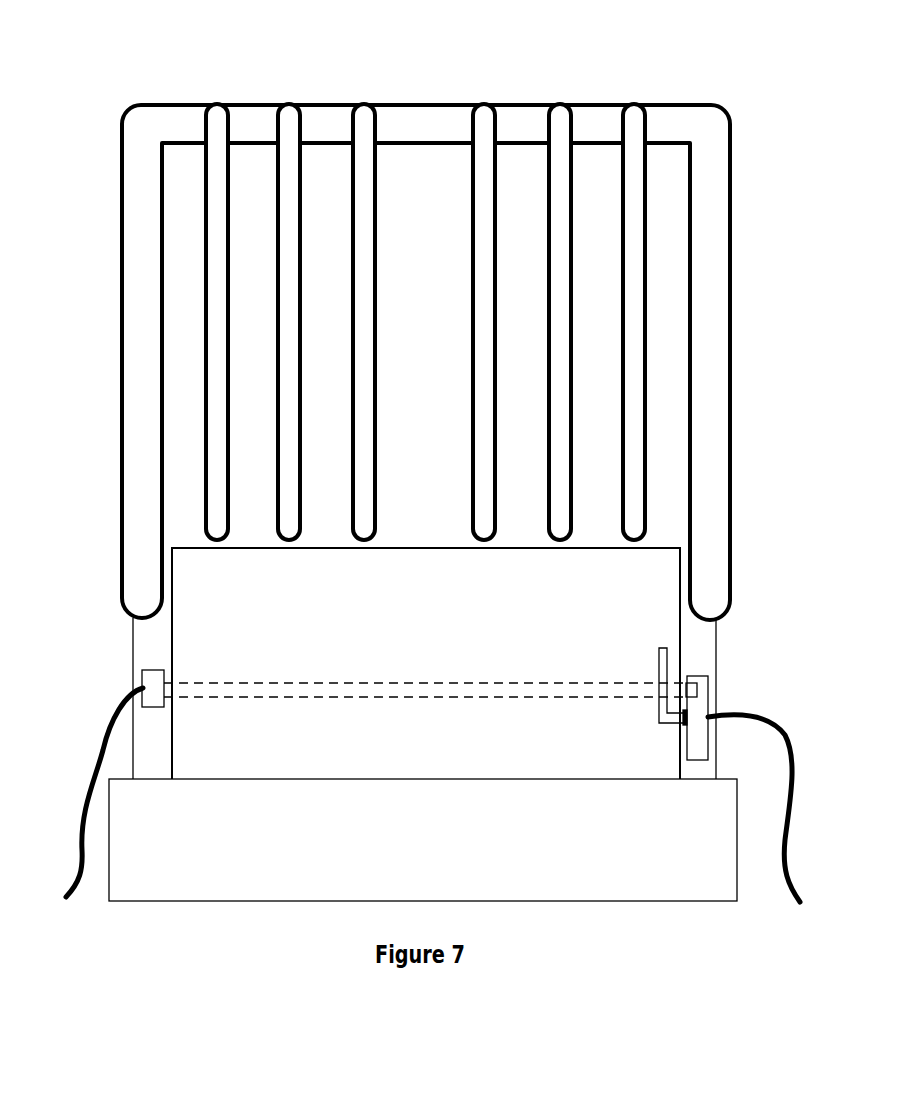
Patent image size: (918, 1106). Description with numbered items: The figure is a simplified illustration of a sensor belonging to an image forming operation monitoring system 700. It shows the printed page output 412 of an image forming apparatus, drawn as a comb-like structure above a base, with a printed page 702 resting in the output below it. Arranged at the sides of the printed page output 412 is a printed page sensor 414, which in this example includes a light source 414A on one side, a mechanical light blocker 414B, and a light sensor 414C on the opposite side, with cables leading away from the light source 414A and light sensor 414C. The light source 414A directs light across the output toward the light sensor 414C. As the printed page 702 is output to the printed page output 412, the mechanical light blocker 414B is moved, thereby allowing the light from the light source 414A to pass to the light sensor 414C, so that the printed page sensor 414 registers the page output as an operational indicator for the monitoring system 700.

The image forming operation monitoring system 700 is at (160, 34).
The printed page output 412 is at (422, 100).
The printed page 702 is at (634, 600).
The light source 414A is at (151, 666).
The mechanical light blocker 414B is at (662, 644).
The light sensor 414C is at (689, 676).
The printed page sensor 414 is at (713, 699).